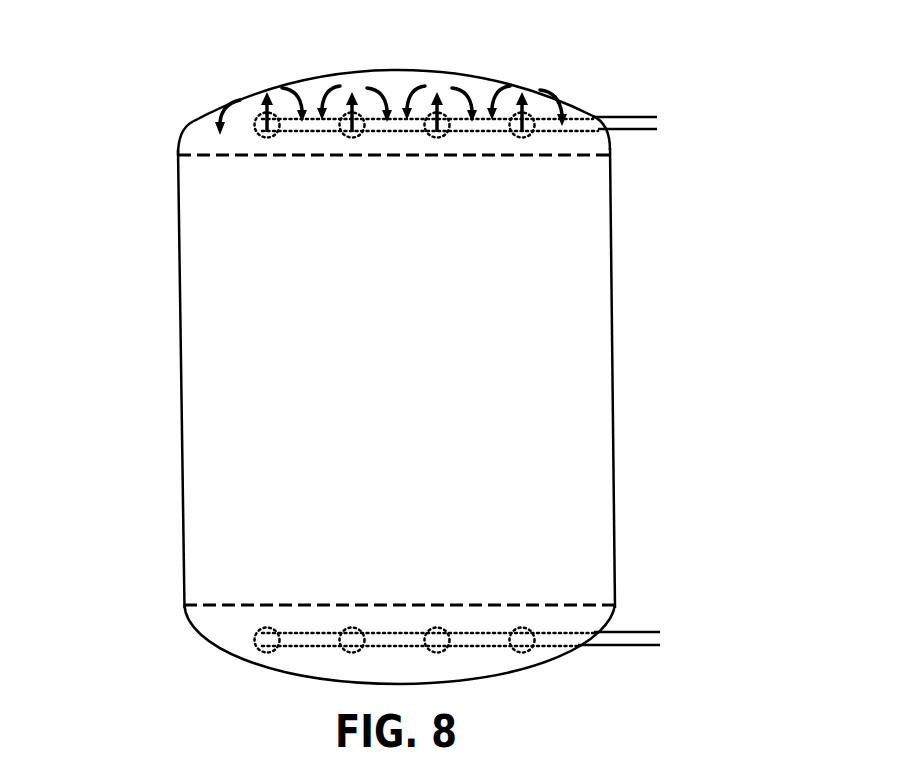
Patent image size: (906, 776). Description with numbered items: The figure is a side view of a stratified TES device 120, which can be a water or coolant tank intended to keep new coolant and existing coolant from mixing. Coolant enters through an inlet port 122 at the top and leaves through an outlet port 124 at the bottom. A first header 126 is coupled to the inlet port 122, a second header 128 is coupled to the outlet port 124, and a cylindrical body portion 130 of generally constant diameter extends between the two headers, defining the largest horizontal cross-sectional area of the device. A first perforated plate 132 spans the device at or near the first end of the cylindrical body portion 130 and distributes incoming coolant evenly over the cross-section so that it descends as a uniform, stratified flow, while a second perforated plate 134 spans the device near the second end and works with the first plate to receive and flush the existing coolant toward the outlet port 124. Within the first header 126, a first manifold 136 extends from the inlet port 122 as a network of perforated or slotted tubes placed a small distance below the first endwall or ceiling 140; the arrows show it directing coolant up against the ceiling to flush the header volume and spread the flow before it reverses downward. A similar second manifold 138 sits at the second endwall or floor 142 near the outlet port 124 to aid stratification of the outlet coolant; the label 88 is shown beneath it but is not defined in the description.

The stratified TES device 120 is at (647, 68).
The inlet port 122 is at (673, 123).
The outlet port 124 is at (673, 638).
The first header 126 is at (208, 133).
The second header 128 is at (212, 628).
The cylindrical body portion 130 is at (392, 348).
The first perforated plate 132 is at (295, 158).
The second perforated plate 134 is at (315, 604).
The first manifold 136 is at (483, 94).
The second manifold 138 is at (488, 662).
The first endwall or ceiling 140 is at (287, 80).
The second endwall or floor 142 is at (273, 667).
The sparger 88 is at (409, 676).